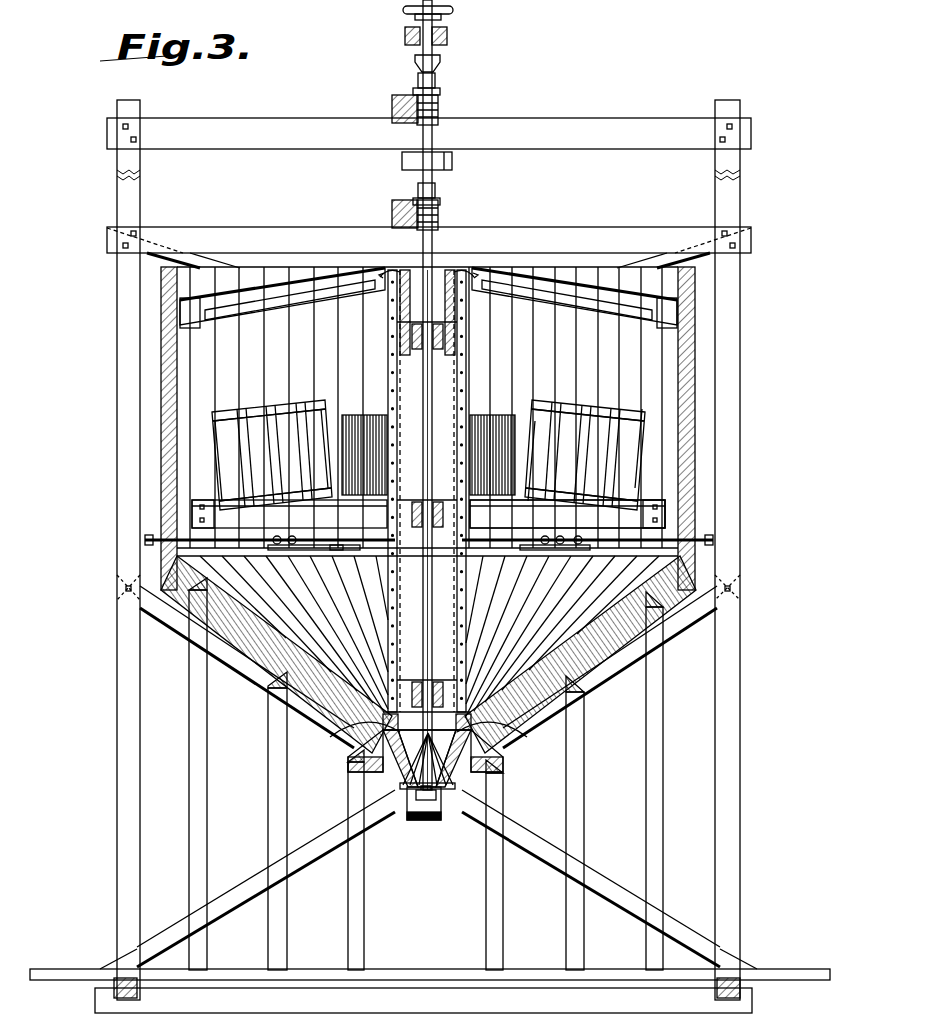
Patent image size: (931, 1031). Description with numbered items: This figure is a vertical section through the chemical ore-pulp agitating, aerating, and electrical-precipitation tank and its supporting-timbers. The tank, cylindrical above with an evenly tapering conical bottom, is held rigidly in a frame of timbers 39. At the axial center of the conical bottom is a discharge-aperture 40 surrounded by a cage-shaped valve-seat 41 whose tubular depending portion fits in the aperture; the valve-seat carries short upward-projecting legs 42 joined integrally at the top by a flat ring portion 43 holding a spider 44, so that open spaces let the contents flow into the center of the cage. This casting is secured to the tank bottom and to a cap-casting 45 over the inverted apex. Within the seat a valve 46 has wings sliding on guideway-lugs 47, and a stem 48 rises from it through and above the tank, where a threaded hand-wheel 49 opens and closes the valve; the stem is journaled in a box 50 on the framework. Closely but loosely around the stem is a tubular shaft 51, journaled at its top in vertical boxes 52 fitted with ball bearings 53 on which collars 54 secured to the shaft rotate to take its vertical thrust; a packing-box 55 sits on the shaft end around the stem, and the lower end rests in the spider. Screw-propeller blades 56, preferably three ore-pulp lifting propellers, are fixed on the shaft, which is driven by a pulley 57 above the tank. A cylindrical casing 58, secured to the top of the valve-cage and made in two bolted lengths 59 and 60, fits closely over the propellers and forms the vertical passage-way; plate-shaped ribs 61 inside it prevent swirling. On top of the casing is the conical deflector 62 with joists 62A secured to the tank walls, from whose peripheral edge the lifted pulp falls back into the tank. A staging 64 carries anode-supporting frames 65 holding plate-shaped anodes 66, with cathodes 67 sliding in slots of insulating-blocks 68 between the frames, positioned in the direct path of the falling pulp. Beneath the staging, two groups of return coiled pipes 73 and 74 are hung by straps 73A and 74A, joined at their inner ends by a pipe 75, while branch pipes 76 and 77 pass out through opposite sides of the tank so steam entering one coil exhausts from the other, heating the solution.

The frame of timbers 39 is at (656, 771).
The discharge-aperture 40 is at (408, 818).
The valve-seat 41 is at (407, 783).
The legs 42 is at (348, 762).
The ring portion 43 is at (330, 733).
The spider 44 is at (522, 733).
The cap-casting 45 is at (400, 790).
The valve 46 is at (438, 818).
The guideway-lugs 47 is at (383, 768).
The stem 48 is at (493, 746).
The hand-wheel 49 is at (453, 10).
The box 50 is at (405, 22).
The tubular shaft 51 is at (433, 243).
The vertical boxes 52 is at (438, 106).
The ball bearings 53 is at (440, 92).
The collars 54 is at (418, 80).
The packing-box 55 is at (440, 62).
The screw-propeller blades 56 is at (432, 350).
The pulley 57 is at (402, 161).
The cylindrical casing 58 is at (455, 328).
The casing length 59 is at (386, 382).
The casing length 60 is at (388, 586).
The plate-shaped ribs 61 is at (428, 500).
The conical ore-pulp-distributing plate 62 is at (315, 274).
The joists 62A is at (428, 300).
The staging 64 is at (567, 514).
The anode-supporting frames 65 is at (216, 463).
The anodes 66 is at (494, 413).
The cathodes 67 is at (428, 449).
The insulating-blocks 68 is at (428, 458).
The return coiled pipes 73 is at (295, 546).
The straps 73A is at (278, 551).
The return coiled pipes 74 is at (545, 545).
The straps 74A is at (576, 550).
The pipe 75 is at (356, 550).
The branch pipe 76 is at (145, 539).
The branch pipe 77 is at (713, 539).